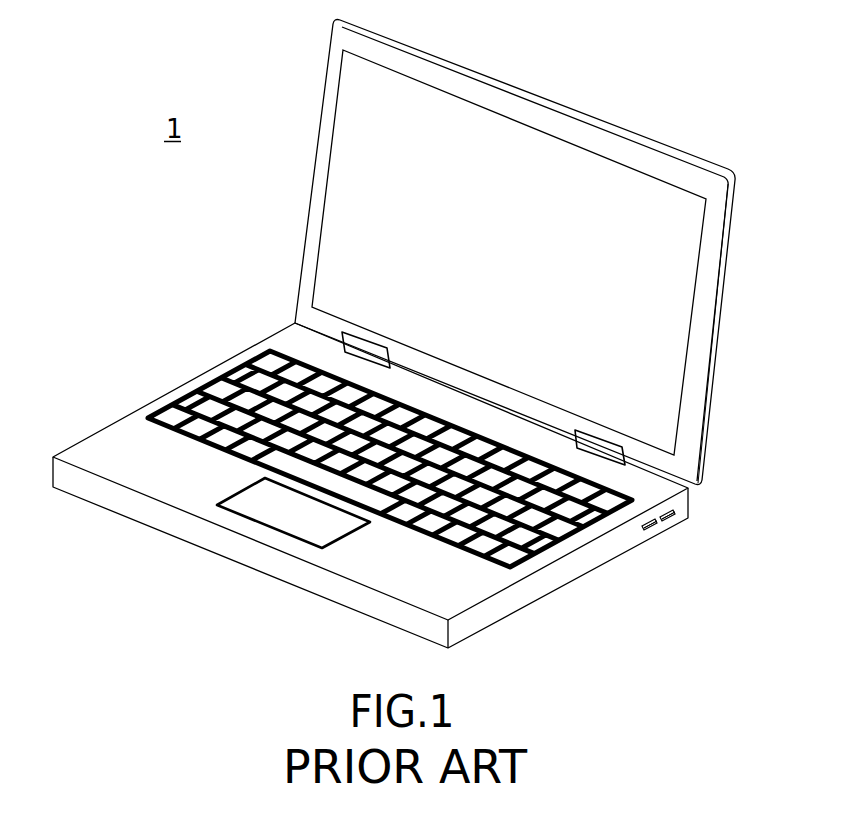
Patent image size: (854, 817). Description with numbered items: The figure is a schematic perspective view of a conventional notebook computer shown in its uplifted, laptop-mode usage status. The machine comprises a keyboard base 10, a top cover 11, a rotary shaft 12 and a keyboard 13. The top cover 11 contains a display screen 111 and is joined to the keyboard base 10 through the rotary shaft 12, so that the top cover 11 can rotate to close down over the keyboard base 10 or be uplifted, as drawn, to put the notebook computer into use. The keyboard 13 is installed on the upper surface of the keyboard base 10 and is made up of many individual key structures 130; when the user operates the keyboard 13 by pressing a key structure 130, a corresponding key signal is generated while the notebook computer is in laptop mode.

The keyboard base 10 is at (120, 445).
The top cover 11 is at (563, 137).
The display screen 111 is at (653, 202).
The rotary shaft 12 is at (370, 350).
The keyboard 13 is at (568, 535).
The key structure 130 is at (248, 367).